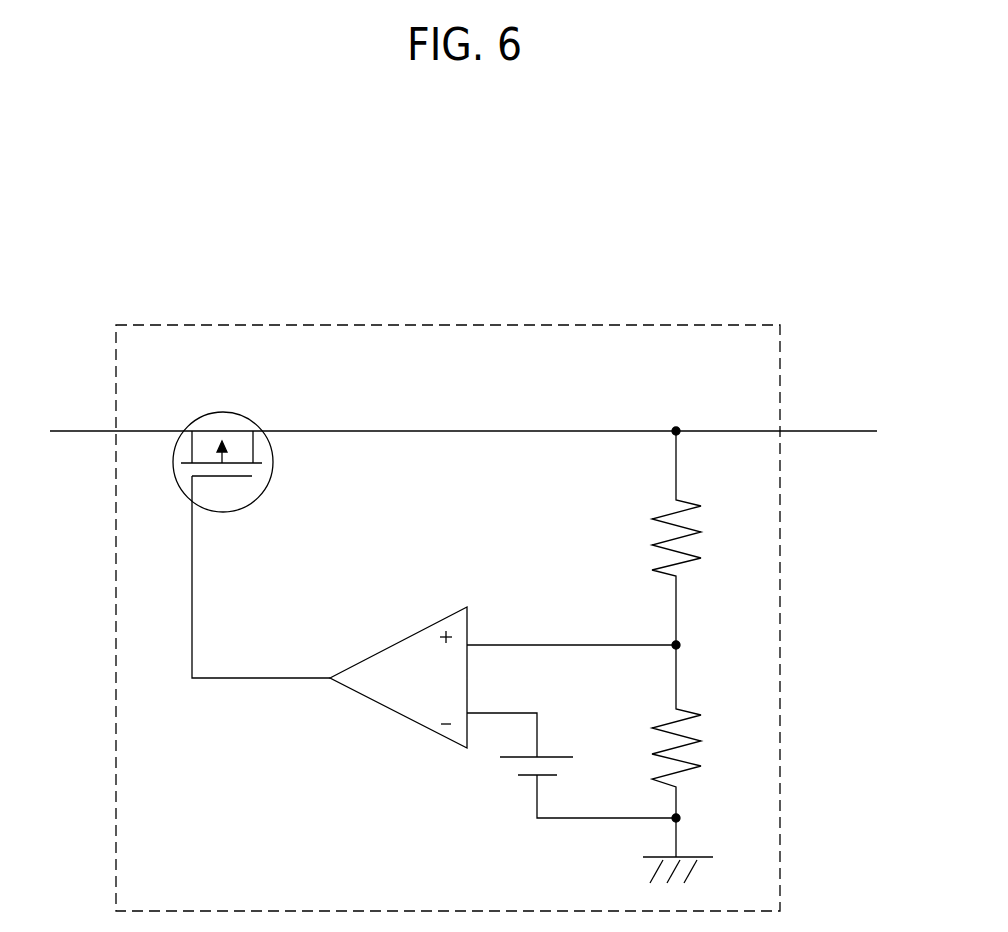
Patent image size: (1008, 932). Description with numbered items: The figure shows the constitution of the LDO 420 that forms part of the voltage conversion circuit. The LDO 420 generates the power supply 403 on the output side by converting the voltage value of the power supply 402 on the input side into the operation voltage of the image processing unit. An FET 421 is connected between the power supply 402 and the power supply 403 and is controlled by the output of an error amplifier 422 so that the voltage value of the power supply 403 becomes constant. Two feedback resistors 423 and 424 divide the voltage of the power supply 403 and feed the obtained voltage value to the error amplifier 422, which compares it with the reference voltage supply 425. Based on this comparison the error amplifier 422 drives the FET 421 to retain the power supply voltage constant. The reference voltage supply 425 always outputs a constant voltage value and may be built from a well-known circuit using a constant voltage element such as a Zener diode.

The power supply 402 is at (80, 431).
The power supply 403 is at (843, 431).
The LDO 420 is at (712, 325).
The FET 421 is at (238, 412).
The error amplifier 422 is at (419, 632).
The feedback resistor 423 is at (703, 519).
The feedback resistor 424 is at (703, 726).
The reference voltage supply 425 is at (567, 750).